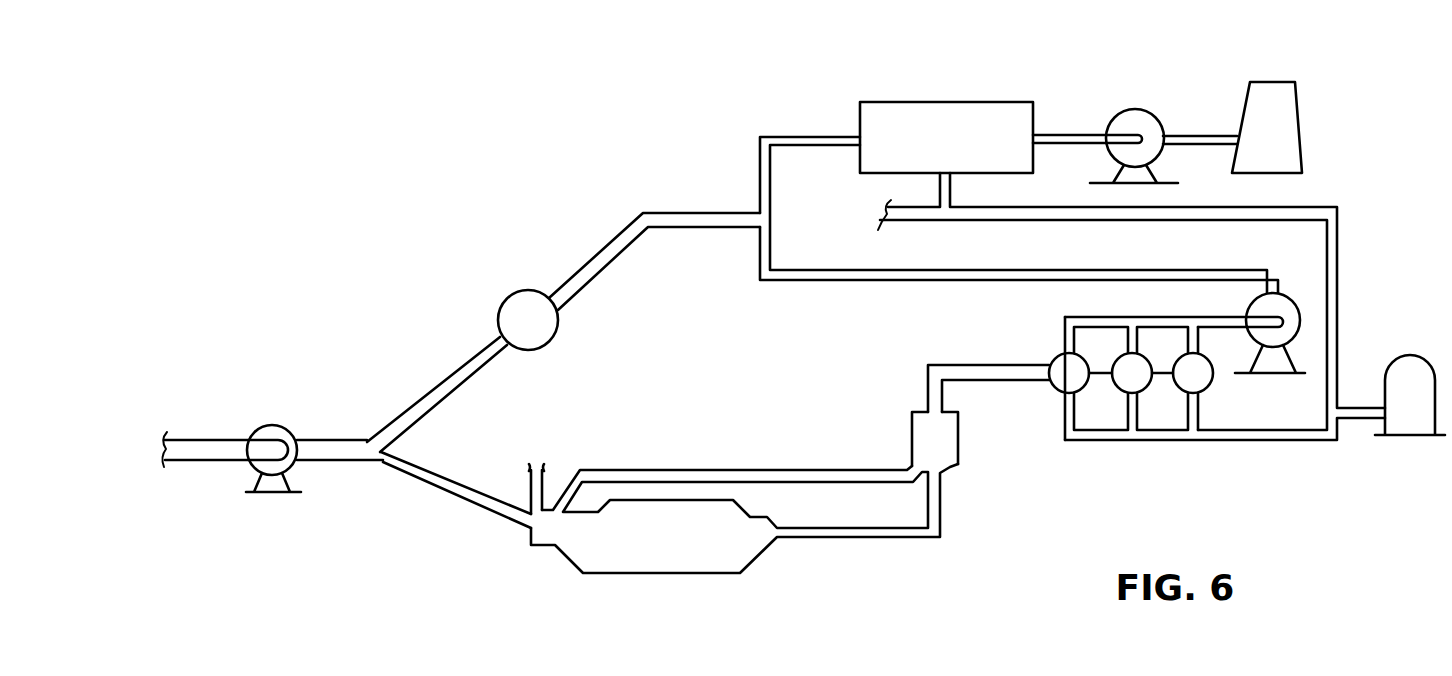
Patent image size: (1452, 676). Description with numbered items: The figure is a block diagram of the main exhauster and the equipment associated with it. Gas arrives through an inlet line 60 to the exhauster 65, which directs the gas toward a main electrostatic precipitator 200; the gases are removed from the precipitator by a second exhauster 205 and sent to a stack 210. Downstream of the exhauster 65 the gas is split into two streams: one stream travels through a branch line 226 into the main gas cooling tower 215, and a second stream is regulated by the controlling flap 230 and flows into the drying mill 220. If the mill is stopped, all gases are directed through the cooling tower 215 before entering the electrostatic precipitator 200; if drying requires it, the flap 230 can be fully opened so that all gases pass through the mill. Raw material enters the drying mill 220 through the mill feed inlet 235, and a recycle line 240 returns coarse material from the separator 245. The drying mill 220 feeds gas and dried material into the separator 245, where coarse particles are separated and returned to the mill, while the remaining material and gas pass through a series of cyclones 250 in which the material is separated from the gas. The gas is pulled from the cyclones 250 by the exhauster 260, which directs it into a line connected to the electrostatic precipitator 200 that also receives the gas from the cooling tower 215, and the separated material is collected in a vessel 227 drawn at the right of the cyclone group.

The inlet pipe 60 is at (220, 440).
The exhauster 65 is at (291, 432).
The first branch pipe 226 is at (440, 388).
The main gas cooling tower 215 is at (520, 290).
The controlling flap 230 is at (456, 482).
The mill feed inlet 235 is at (542, 468).
The drying mill 220 is at (660, 574).
The recycle line 240 is at (762, 470).
The separator 245 is at (950, 469).
The main electrostatic precipitator 200 is at (930, 102).
The exhauster 205 is at (1126, 112).
The stack 210 is at (1270, 82).
The exhauster 260 is at (1290, 293).
The cyclones 250 is at (1150, 442).
The tank 227 is at (1410, 438).